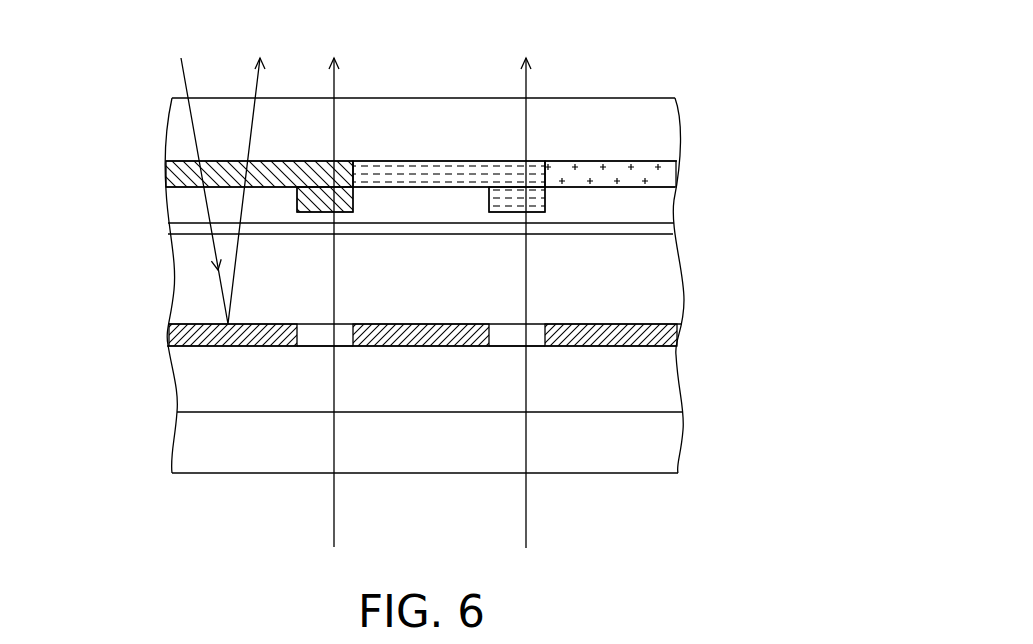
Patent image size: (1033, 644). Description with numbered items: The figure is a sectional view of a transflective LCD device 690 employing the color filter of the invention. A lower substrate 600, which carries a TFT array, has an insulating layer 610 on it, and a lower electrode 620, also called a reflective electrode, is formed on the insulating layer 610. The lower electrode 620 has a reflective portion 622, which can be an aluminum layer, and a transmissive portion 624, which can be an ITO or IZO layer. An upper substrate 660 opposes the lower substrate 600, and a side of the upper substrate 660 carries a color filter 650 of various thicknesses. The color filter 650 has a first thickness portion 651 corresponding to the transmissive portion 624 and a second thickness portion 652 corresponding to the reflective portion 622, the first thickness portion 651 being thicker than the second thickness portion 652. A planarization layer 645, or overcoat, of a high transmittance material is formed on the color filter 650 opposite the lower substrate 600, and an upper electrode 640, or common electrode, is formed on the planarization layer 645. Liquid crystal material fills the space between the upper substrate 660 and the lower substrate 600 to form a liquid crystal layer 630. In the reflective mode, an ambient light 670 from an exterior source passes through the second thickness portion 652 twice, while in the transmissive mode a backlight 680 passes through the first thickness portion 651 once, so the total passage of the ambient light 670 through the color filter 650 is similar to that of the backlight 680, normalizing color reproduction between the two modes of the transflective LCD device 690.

The lower substrate 600 is at (672, 447).
The insulating layer 610 is at (672, 385).
The lower electrode 620 is at (463, 431).
The reflective portion 622 is at (250, 346).
The transmissive portion 624 is at (312, 346).
The liquid crystal layer 630 is at (670, 265).
The upper electrode 640 is at (658, 228).
The planarization layer 645 is at (183, 207).
The color filter 650 is at (420, 111).
The first thickness portion 651 is at (316, 161).
The second thickness portion 652 is at (183, 160).
The upper substrate 660 is at (672, 127).
The ambient light 670 is at (181, 75).
The backlight 680 is at (336, 498).
The transflective LCD device 690 is at (746, 82).